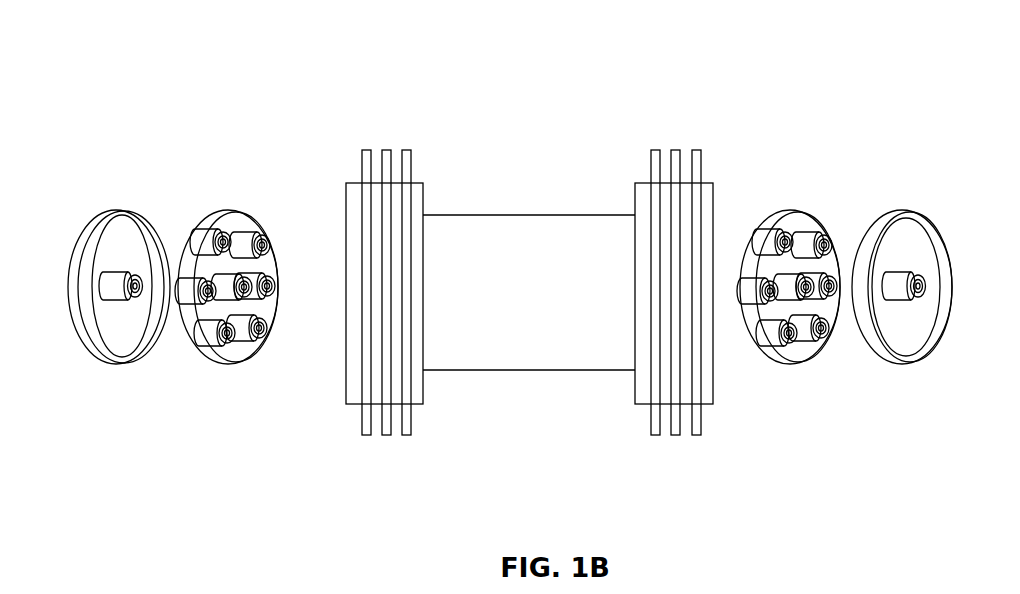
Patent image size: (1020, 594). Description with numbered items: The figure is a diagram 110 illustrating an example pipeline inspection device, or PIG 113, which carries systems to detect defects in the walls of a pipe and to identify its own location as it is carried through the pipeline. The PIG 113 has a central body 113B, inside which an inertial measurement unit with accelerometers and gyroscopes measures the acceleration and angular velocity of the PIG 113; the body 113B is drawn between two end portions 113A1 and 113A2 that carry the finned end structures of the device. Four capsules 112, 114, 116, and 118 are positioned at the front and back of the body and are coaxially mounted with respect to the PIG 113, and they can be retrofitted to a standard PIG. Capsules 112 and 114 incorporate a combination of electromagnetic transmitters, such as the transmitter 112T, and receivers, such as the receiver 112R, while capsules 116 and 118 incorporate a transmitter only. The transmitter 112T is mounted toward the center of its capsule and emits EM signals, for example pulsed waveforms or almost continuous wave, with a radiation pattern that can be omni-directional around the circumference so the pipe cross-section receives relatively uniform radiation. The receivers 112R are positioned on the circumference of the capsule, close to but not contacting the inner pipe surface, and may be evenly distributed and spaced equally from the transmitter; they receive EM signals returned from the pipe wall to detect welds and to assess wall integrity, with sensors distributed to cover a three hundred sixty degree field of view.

The diagram 110 is at (876, 119).
The capsule 112 is at (224, 287).
The receiver 112R is at (262, 245).
The transmitter 112T is at (228, 328).
The PIG 113 is at (347, 183).
The first end cap 113A1 is at (345, 390).
The second end cap 113A2 is at (713, 375).
The body 113B is at (500, 303).
The capsule 114 is at (778, 212).
The capsule 116 is at (893, 212).
The capsule 118 is at (110, 212).